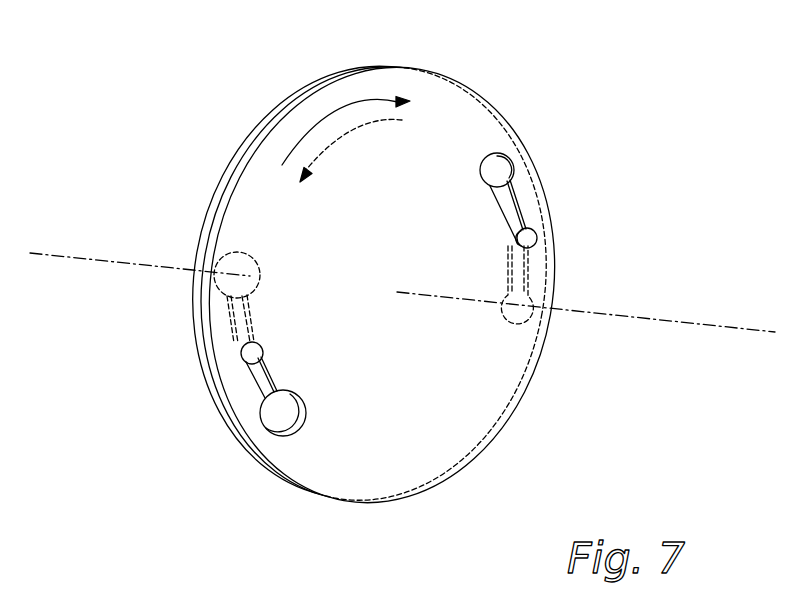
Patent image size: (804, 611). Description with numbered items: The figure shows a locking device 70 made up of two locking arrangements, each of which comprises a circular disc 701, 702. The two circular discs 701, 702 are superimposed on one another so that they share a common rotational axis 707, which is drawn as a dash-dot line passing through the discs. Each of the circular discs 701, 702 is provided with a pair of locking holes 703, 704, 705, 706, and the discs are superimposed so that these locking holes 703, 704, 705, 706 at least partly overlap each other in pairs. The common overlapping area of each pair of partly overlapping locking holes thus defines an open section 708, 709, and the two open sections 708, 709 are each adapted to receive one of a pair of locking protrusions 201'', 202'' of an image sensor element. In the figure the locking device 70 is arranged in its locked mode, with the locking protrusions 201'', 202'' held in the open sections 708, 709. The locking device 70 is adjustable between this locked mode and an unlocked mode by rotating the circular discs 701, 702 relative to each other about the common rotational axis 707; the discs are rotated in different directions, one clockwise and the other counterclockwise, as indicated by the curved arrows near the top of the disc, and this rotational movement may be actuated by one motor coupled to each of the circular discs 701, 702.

The locking device 70 is at (662, 80).
The circular disc 701 is at (457, 127).
The circular disc 702 is at (211, 202).
The locking hole 703 is at (500, 177).
The locking hole 704 is at (239, 470).
The locking hole 705 is at (540, 355).
The locking hole 706 is at (215, 277).
The common rotational axis 707 is at (722, 326).
The open section 708 is at (549, 228).
The open section 709 is at (243, 381).
The locking protrusion 201'' is at (586, 313).
The locking protrusion 202'' is at (321, 364).